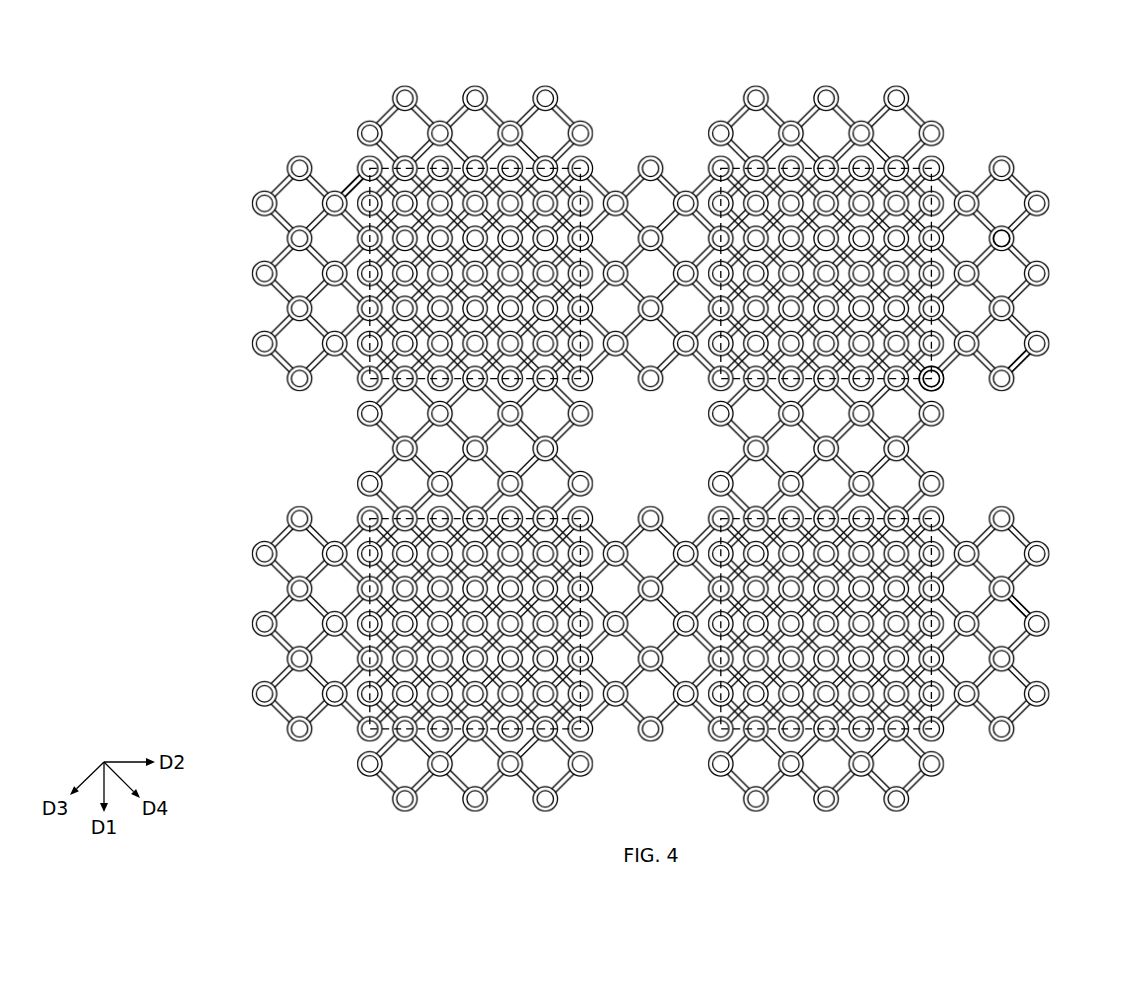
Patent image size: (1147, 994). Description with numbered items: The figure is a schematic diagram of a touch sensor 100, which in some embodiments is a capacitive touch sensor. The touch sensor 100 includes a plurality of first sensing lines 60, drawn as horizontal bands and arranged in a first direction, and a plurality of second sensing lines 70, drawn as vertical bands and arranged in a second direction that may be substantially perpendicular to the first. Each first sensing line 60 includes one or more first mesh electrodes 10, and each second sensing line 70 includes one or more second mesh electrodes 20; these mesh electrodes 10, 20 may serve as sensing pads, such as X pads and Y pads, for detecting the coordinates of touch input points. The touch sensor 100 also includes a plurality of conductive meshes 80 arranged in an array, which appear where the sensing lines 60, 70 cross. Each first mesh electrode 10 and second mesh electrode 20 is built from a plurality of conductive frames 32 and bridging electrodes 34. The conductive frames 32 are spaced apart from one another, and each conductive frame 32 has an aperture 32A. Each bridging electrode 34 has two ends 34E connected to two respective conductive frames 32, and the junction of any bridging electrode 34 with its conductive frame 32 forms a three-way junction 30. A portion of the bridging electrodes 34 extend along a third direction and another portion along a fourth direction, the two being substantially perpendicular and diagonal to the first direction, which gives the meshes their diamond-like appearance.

The touch sensor 100 is at (1066, 66).
The first mesh electrode 10 is at (660, 448).
The second mesh electrode 20 is at (674, 434).
The three-way junction 30 is at (922, 542).
The conductive frame 32 is at (942, 386).
The aperture 32A is at (1014, 239).
The bridging electrode 34 is at (1020, 361).
The end 34E is at (1008, 589).
The first sensing line 60 is at (250, 157).
The second sensing line 70 is at (360, 90).
The conductive mesh 80 is at (362, 187).